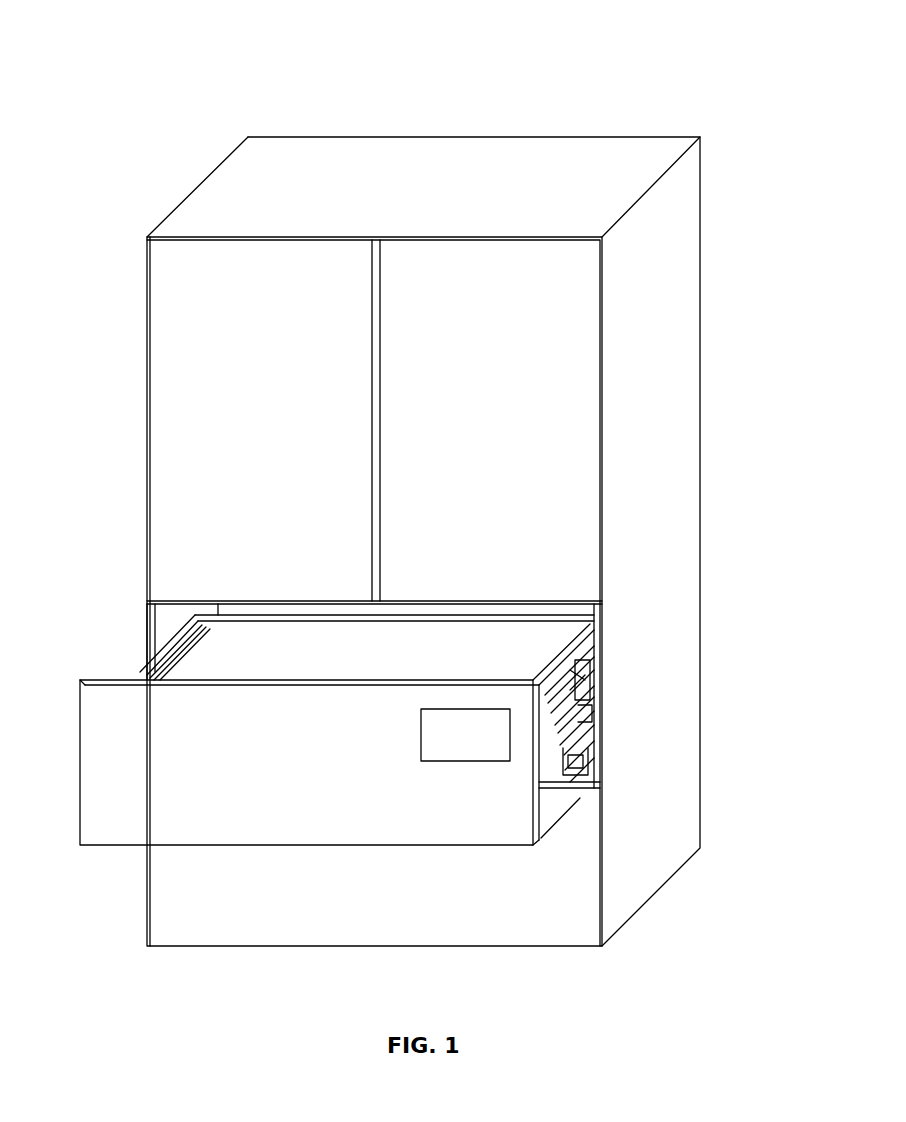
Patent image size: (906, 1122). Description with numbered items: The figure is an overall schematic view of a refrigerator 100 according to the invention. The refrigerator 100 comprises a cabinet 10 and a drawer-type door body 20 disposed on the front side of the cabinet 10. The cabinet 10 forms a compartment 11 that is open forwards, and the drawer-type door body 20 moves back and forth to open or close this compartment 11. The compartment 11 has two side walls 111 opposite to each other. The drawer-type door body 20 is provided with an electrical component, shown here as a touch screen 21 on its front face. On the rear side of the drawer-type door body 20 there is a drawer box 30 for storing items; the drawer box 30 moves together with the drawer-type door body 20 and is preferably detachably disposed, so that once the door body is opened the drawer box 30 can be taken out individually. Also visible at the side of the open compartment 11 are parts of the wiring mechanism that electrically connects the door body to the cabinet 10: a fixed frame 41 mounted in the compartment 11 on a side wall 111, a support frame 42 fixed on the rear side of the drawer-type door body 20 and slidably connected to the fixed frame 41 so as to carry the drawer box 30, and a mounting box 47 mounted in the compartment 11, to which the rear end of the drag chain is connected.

The refrigerator 100 is at (500, 52).
The cabinet 10 is at (687, 277).
The compartment 11 is at (590, 597).
The side wall 111 is at (172, 612).
The drawer-type door body 20 is at (100, 837).
The touch screen 21 is at (455, 722).
The drawer box 30 is at (143, 670).
The fixed frame 41 is at (600, 665).
The support frame 42 is at (593, 723).
The mounting box 47 is at (587, 755).